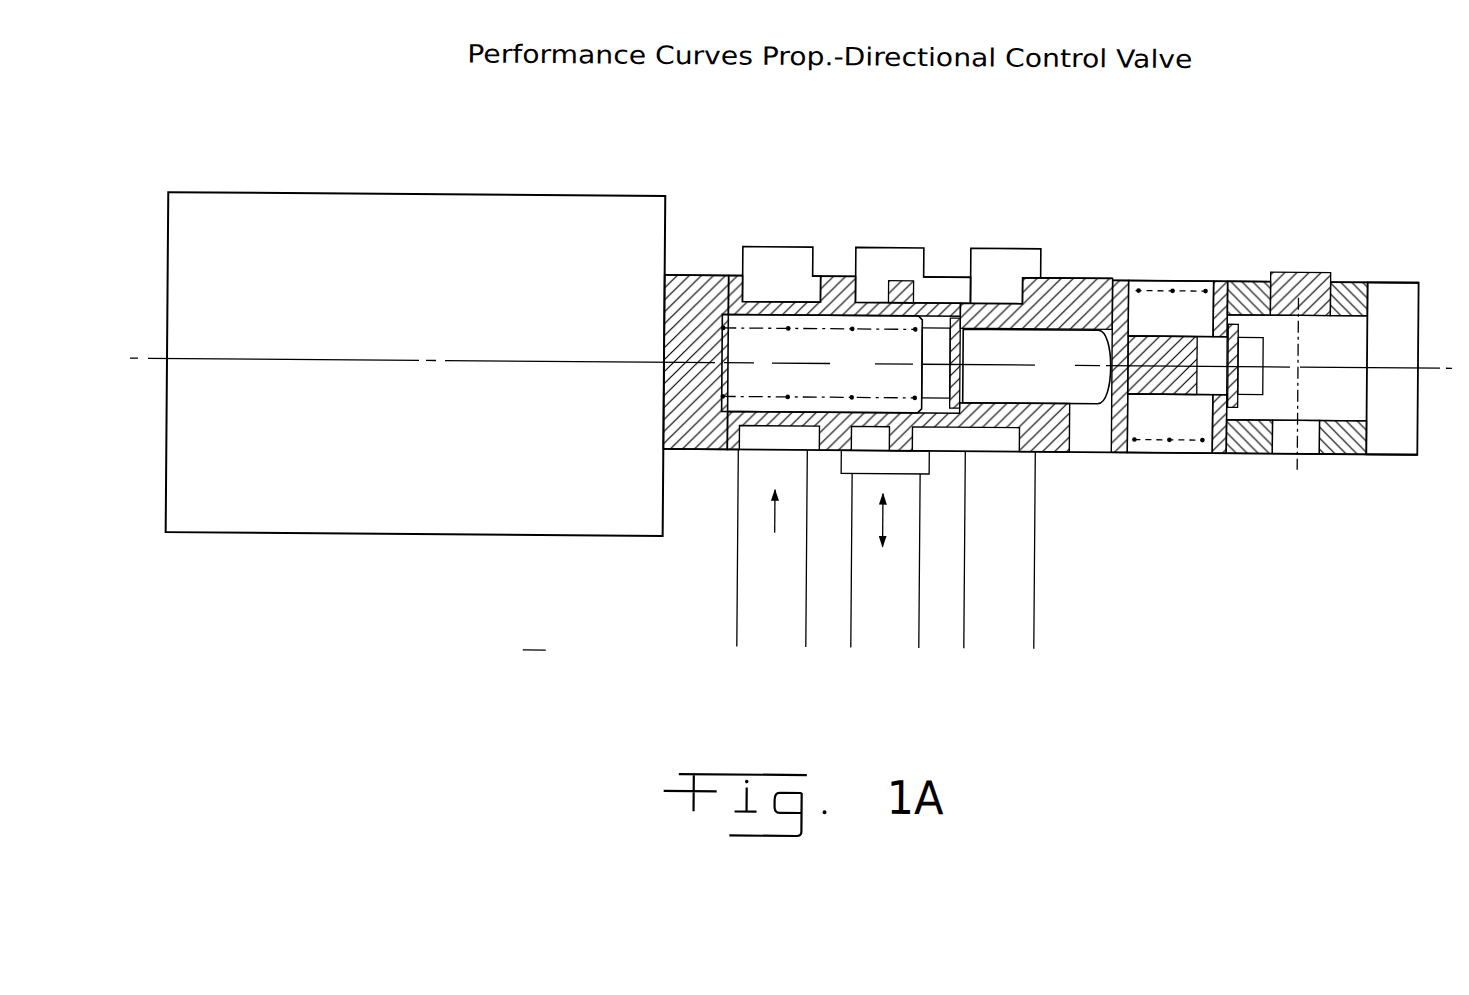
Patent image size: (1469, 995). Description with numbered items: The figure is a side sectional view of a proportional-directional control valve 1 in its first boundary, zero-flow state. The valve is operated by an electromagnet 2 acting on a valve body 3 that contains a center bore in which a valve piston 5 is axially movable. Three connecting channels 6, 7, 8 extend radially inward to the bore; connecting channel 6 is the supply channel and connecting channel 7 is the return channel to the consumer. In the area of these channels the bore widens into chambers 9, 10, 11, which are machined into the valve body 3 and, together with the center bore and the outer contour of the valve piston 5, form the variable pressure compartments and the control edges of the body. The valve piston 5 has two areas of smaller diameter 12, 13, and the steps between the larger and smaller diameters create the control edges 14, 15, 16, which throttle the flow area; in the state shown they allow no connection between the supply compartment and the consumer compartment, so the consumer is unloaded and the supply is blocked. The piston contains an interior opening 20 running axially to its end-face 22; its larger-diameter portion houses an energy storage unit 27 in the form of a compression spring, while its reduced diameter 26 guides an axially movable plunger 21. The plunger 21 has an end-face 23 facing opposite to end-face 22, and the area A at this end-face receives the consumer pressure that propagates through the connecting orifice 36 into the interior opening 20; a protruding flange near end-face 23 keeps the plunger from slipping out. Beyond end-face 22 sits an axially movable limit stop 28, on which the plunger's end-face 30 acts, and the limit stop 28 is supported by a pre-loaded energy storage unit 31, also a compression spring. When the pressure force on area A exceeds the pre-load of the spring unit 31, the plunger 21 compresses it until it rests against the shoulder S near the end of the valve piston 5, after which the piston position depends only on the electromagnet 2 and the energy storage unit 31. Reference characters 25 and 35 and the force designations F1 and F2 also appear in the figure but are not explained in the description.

The proportional-directional control valve 1 is at (1203, 204).
The electromagnet 2 is at (321, 166).
The valve body 3 is at (534, 636).
The valve piston 5 is at (1070, 425).
The connecting channel 6 is at (784, 656).
The connecting channel 7 is at (897, 656).
The connecting channel 8 is at (1008, 656).
The chamber 9 is at (792, 250).
The chamber 10 is at (872, 250).
The chamber 11 is at (1023, 251).
The area of smaller diameter 12 is at (785, 297).
The area of smaller diameter 13 is at (957, 298).
The control edge 14 is at (688, 270).
The control edge 15 is at (840, 270).
The control edge 16 is at (1058, 270).
The interior opening 20 is at (870, 375).
The plunger 21 is at (1068, 373).
The end-face 22 is at (1078, 411).
The end-face 23 is at (908, 341).
The spring chamber 25 is at (770, 380).
The reduced diameter 26 is at (993, 389).
The energy storage unit 27 is at (725, 272).
The limit stop 28 is at (1128, 414).
The end-face 30 is at (1087, 320).
The energy storage unit 31 is at (1172, 282).
The pilot passage 35 is at (827, 460).
The connecting orifice 36 is at (870, 437).
The area A is at (1103, 327).
The shoulder S is at (973, 326).
The force F1 is at (722, 392).
The force F2 is at (1170, 433).